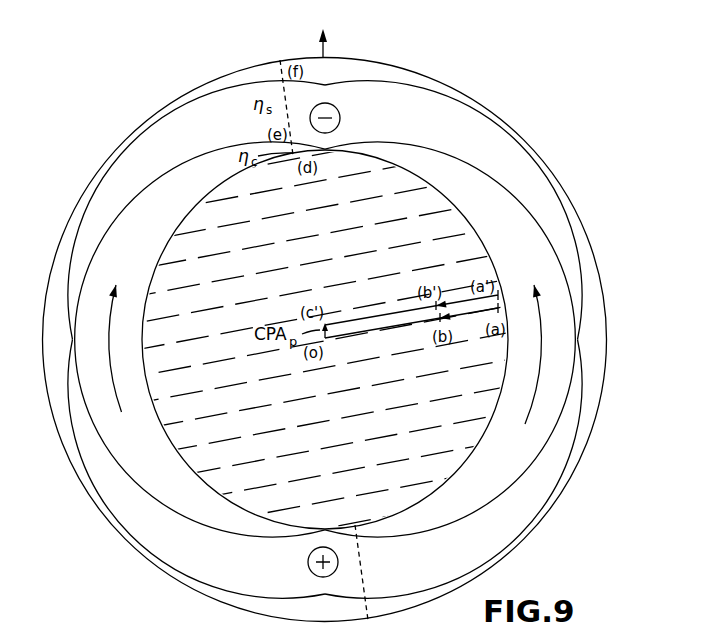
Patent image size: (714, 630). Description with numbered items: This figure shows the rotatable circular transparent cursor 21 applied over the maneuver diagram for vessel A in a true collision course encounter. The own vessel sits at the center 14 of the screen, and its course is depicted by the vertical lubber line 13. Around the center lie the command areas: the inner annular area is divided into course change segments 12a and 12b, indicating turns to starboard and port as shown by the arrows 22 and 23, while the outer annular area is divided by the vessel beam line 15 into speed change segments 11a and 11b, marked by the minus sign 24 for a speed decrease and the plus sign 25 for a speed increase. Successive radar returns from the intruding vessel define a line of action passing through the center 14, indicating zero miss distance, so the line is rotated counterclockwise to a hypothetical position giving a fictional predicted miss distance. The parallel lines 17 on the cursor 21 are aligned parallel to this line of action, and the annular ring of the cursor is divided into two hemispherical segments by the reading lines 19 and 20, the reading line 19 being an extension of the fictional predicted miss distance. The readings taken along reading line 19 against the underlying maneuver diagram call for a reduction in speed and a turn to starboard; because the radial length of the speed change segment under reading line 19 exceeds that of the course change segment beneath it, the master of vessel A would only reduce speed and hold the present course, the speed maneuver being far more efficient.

The circular transparent cursor 21 is at (425, 66).
The speed change command area 11a is at (502, 155).
The speed change command area 11b is at (440, 560).
The course change command area 12a is at (533, 255).
The course change command area 12b is at (123, 245).
The vessel beam line 15 is at (233, 356).
The parallel lines 17 is at (204, 306).
The arrow 22 is at (122, 376).
The arrow 23 is at (535, 360).
The lubber line 13 is at (326, 50).
The reading line 19 is at (287, 98).
The reading line 20 is at (362, 565).
The minus sign 24 is at (339, 112).
The plus sign 25 is at (308, 567).
The center 14 is at (330, 340).